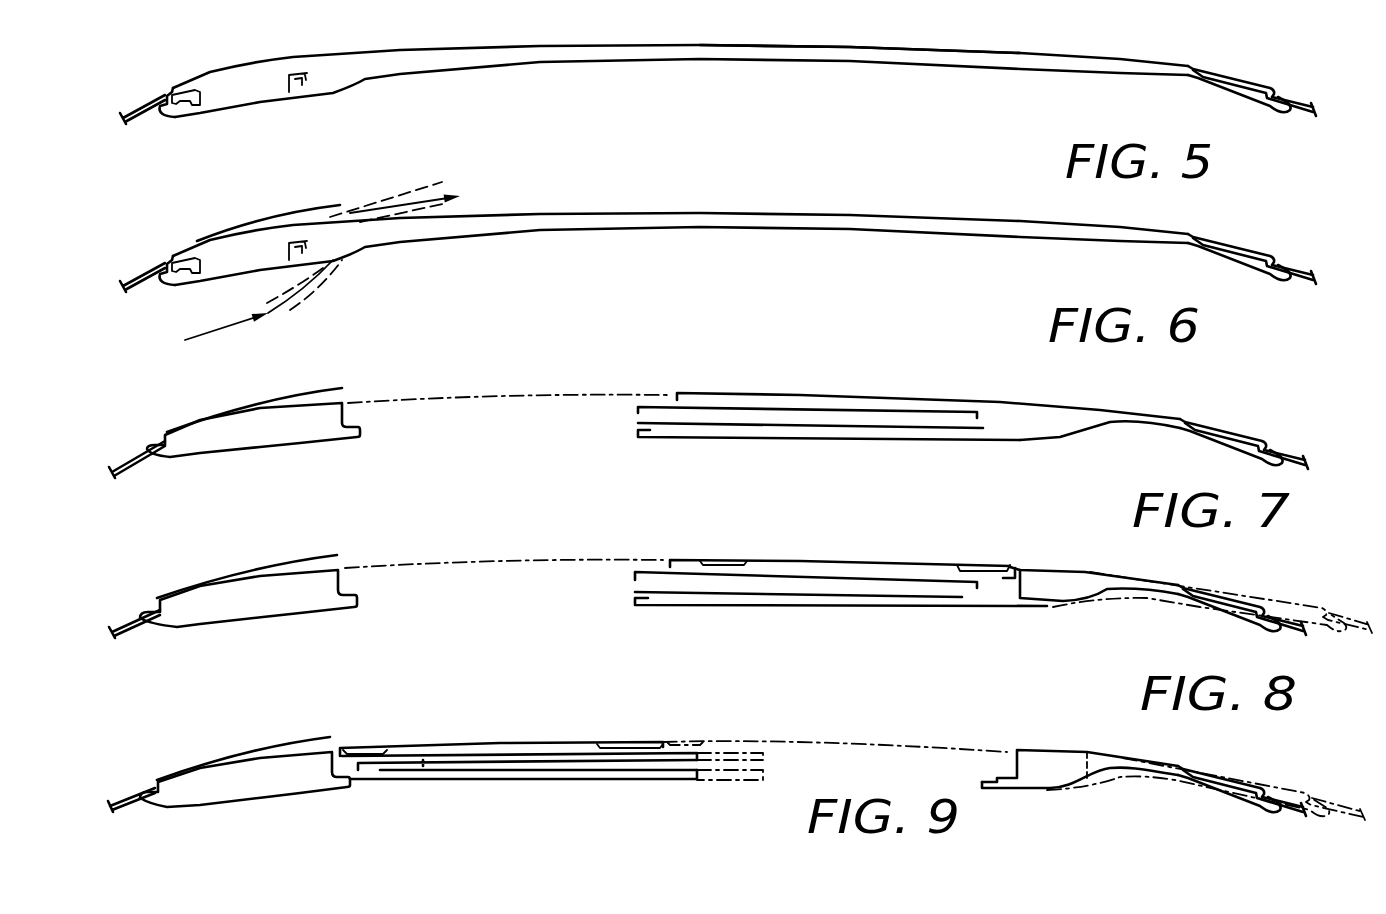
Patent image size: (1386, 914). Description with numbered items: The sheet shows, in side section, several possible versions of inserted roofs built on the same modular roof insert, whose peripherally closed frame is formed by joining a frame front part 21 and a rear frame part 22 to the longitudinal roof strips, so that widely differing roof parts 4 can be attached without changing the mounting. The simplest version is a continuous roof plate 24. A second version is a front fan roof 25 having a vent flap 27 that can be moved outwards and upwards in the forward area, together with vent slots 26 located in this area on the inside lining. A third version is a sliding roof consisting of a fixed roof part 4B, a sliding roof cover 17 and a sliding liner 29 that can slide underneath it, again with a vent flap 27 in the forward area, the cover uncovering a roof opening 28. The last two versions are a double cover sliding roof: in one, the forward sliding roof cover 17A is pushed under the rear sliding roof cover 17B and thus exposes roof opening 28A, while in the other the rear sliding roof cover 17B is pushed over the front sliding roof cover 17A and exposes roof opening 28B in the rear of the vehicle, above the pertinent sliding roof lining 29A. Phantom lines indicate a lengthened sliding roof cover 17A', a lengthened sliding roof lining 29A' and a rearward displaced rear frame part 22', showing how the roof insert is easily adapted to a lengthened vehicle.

In FIG. 5, the roof part 4 is at (891, 50).
In FIG. 5, the continuous roof plate 24 is at (613, 62).
In FIG. 6, the front fan roof 25 is at (578, 212).
In FIG. 6, the vent slots 26 is at (340, 258).
In FIG. 6, the vent flap 27 is at (297, 212).
In FIG. 7, the vent flap 27 is at (297, 395).
In FIG. 8, the vent flap 27 is at (280, 562).
In FIG. 9, the vent flap 27 is at (273, 745).
In FIG. 7, the roof opening 28 is at (512, 391).
In FIG. 8, the roof opening 28A is at (523, 556).
In FIG. 9, the roof opening 28B is at (910, 736).
In FIG. 7, the sliding roof cover 17 is at (836, 405).
In FIG. 8, the forward sliding roof cover 17A is at (806, 552).
In FIG. 9, the forward sliding roof cover 17A is at (527, 724).
In FIG. 8, the rear sliding roof cover 17B is at (883, 562).
In FIG. 9, the rear sliding roof cover 17B is at (493, 740).
In FIG. 9, the lengthened sliding roof cover 17A' is at (720, 719).
In FIG. 7, the fixed roof part 4B is at (955, 400).
In FIG. 7, the frame front part 21 is at (263, 433).
In FIG. 8, the frame front part 21 is at (260, 602).
In FIG. 9, the frame front part 21 is at (263, 783).
In FIG. 8, the rear frame part 22 is at (1187, 573).
In FIG. 9, the rear frame part 22 is at (1173, 751).
In FIG. 9, the displaced rear frame part 22' is at (1188, 808).
In FIG. 7, the sliding liner 29 is at (937, 428).
In FIG. 8, the sliding roof lining 29A is at (841, 622).
In FIG. 9, the sliding roof lining 29A is at (523, 801).
In FIG. 9, the lengthened sliding roof lining 29A' is at (736, 801).